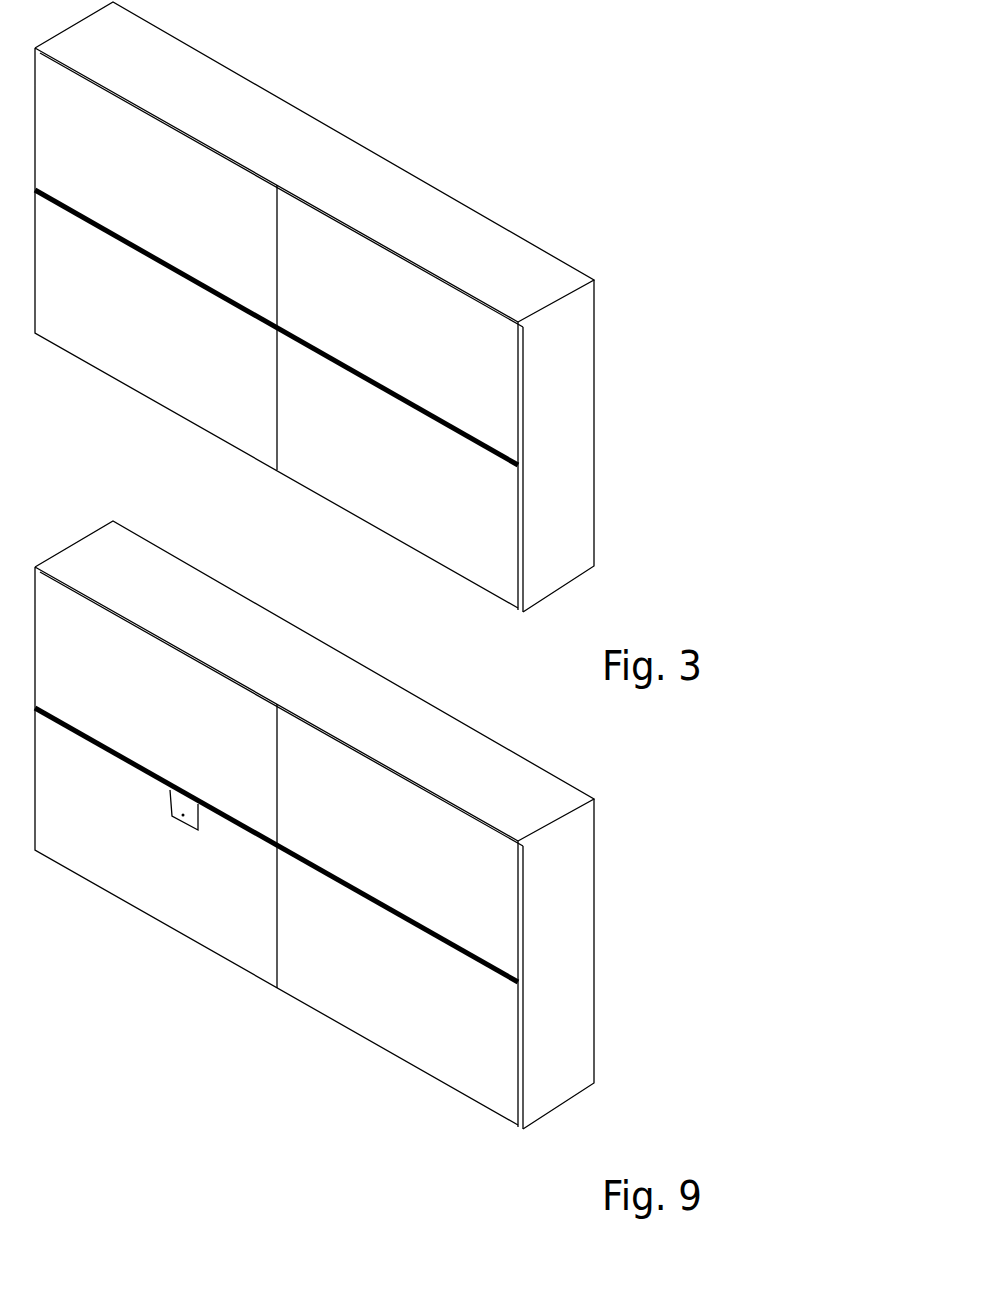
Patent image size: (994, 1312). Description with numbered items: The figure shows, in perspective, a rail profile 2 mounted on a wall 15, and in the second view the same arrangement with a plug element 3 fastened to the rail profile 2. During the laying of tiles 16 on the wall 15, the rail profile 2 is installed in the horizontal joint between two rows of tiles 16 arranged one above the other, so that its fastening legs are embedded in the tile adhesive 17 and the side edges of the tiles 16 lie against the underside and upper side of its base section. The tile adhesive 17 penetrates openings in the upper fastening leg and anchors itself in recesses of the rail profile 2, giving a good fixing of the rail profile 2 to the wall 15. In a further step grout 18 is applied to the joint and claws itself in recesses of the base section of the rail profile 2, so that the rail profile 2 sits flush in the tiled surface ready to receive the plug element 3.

In FIG. 3, the rail profile 2 is at (415, 397).
In FIG. 9, the rail profile 2 is at (345, 878).
In FIG. 9, the plug element 3 is at (186, 780).
In FIG. 3, the wall 15 is at (563, 458).
In FIG. 9, the wall 15 is at (562, 1000).
In FIG. 3, the tiles 16 is at (142, 162).
In FIG. 9, the tiles 16 is at (77, 650).
In FIG. 3, the tile adhesive 17 is at (524, 432).
In FIG. 9, the tile adhesive 17 is at (522, 968).
In FIG. 3, the grout 18 is at (277, 260).
In FIG. 9, the grout 18 is at (279, 830).